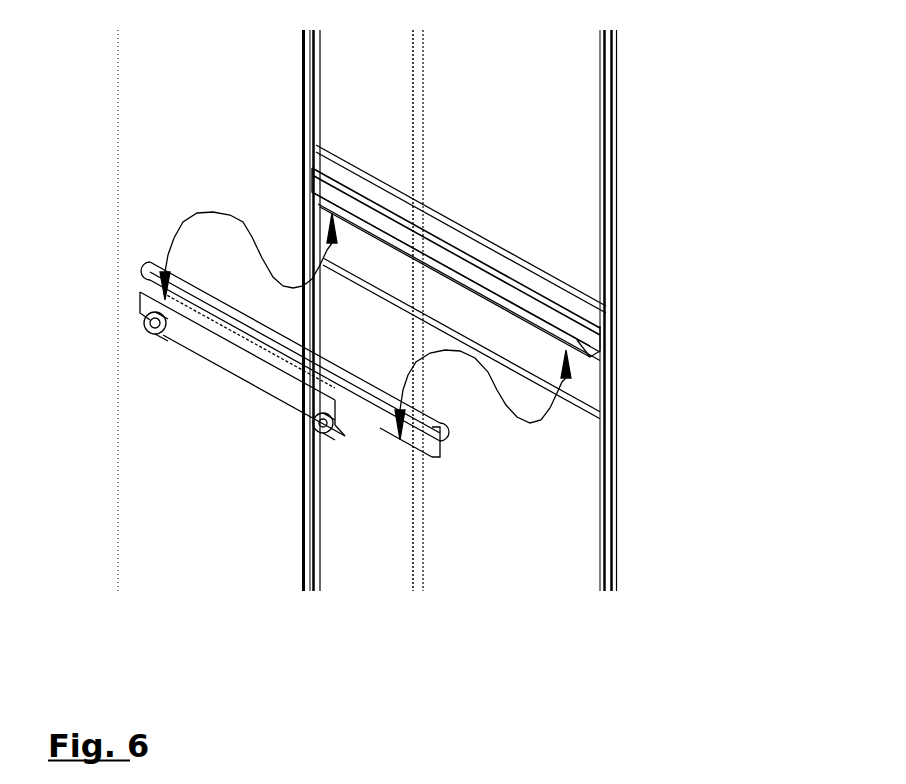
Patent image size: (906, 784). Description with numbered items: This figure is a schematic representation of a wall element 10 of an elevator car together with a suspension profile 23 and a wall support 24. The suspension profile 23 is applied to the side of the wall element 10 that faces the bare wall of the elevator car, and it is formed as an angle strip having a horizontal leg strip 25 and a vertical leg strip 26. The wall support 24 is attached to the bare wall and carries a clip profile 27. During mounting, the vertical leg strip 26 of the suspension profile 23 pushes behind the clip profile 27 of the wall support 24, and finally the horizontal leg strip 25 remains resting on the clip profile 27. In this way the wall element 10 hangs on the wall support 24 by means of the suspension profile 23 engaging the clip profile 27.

The wall element 10 is at (567, 190).
The suspension profile 23 is at (503, 267).
The wall support 24 is at (240, 370).
The horizontal leg strip 25 is at (523, 292).
The vertical leg strip 26 is at (578, 342).
The clip profile 27 is at (437, 437).